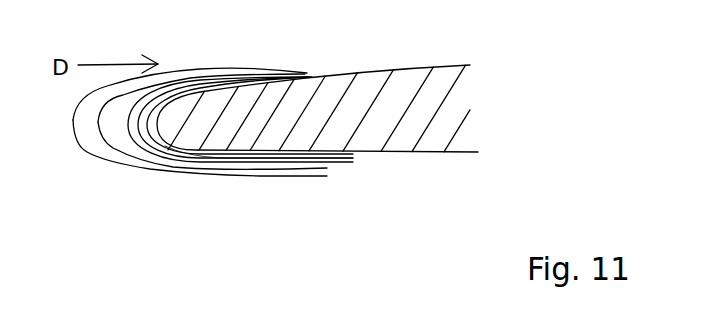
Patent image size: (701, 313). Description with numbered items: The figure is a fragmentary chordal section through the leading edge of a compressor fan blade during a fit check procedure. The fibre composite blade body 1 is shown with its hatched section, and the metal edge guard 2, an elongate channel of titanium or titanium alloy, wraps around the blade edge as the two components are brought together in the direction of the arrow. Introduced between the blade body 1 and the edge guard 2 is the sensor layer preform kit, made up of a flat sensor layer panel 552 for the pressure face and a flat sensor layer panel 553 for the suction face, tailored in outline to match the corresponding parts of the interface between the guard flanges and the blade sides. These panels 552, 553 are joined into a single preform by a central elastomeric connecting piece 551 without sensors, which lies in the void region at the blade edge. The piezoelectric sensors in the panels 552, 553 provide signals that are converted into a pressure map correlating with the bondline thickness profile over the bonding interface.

The blade body 1 is at (412, 133).
The edge guard 2 is at (85, 143).
The central elastomeric connecting piece 551 is at (137, 130).
The pressure side sensor layer panel 552 is at (230, 150).
The suction side sensor layer panel 553 is at (222, 85).